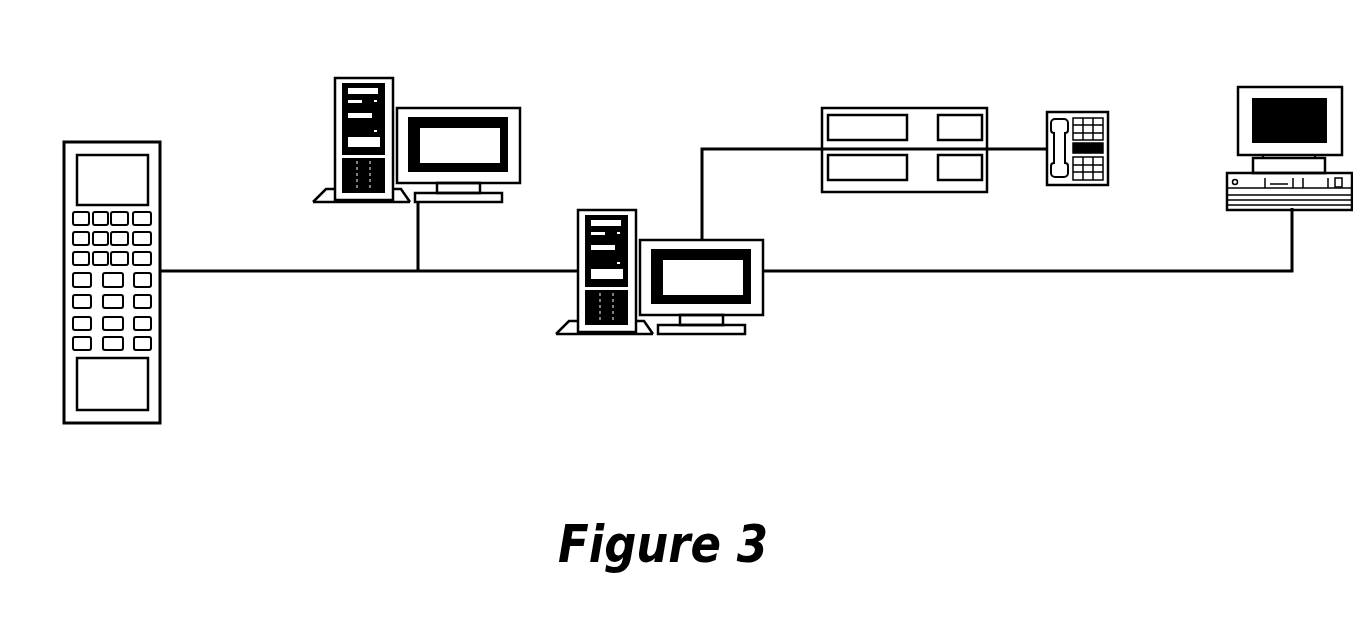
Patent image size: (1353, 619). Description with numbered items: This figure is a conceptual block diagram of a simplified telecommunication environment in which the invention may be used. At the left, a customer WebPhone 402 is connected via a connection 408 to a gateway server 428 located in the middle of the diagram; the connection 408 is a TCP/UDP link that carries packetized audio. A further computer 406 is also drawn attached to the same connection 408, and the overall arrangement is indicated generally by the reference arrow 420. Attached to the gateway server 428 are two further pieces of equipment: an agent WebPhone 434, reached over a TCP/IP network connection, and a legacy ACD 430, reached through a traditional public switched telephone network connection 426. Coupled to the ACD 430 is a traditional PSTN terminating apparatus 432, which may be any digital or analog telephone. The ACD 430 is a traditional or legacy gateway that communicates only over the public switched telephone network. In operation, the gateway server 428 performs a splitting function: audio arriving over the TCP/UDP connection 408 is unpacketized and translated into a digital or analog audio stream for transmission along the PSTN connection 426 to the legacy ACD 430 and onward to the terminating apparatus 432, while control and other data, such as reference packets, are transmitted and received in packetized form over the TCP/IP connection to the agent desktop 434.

The customer WebPhone 402 is at (92, 142).
The computer 406 is at (355, 78).
The connection 408 is at (253, 271).
The telephone system 420 is at (952, 404).
The public switched telephone network connection 426 is at (732, 150).
The gateway server 428 is at (680, 332).
The legacy ACD 430 is at (885, 108).
The PSTN terminating apparatus 432 is at (1077, 112).
The agent WebPhone 434 is at (1268, 87).